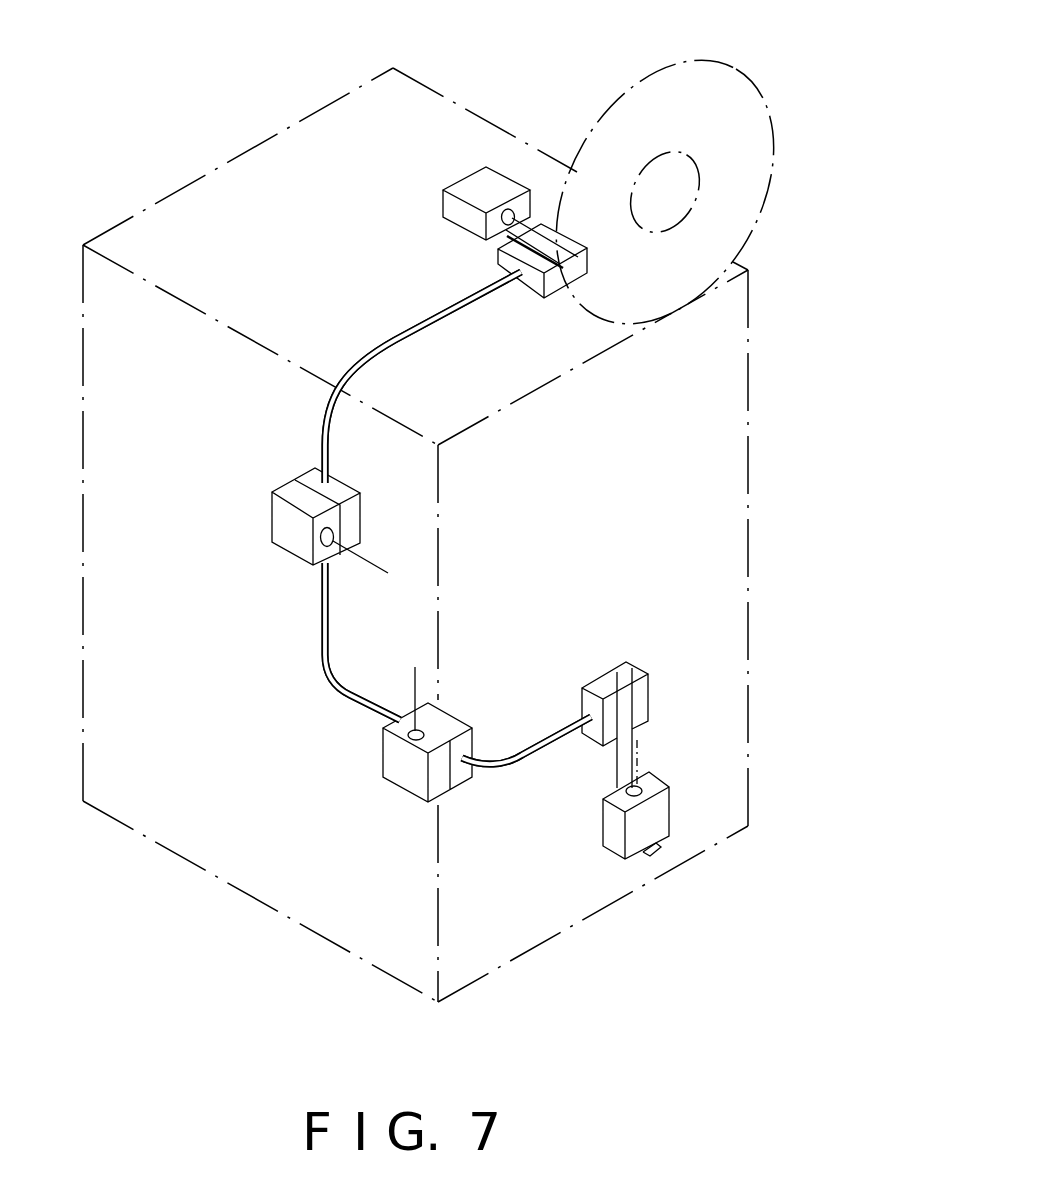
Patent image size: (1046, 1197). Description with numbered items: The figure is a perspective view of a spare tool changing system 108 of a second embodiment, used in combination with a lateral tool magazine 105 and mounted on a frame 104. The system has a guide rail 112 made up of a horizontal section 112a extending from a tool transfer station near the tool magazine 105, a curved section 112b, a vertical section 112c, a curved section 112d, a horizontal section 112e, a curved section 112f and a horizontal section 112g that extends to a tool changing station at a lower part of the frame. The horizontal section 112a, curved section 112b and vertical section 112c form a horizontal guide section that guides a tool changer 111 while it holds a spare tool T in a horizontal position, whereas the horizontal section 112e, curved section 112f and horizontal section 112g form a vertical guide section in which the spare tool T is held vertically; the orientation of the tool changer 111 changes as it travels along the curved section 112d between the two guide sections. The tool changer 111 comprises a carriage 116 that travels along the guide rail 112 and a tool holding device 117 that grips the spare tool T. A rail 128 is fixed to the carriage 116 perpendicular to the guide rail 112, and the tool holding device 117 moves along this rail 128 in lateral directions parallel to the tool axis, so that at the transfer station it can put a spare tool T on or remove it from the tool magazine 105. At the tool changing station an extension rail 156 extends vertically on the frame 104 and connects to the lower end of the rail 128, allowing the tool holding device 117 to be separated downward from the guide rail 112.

The frame 104 is at (252, 147).
The lateral tool magazine 105 is at (773, 145).
The spare tool changing system 108 is at (380, 231).
The tool changer 111 is at (610, 78).
The guide rail 112 is at (385, 354).
The horizontal section 112a is at (412, 334).
The curved section 112b is at (322, 430).
The vertical section 112c is at (322, 618).
The curved section 112d is at (327, 677).
The horizontal section 112e is at (343, 697).
The curved section 112f is at (502, 768).
The horizontal section 112g is at (552, 735).
The carriage 116 is at (552, 227).
The tool holding device 117 is at (485, 163).
The rail 128 is at (497, 263).
The extension rail 156 is at (616, 774).
The spare tool T is at (598, 260).